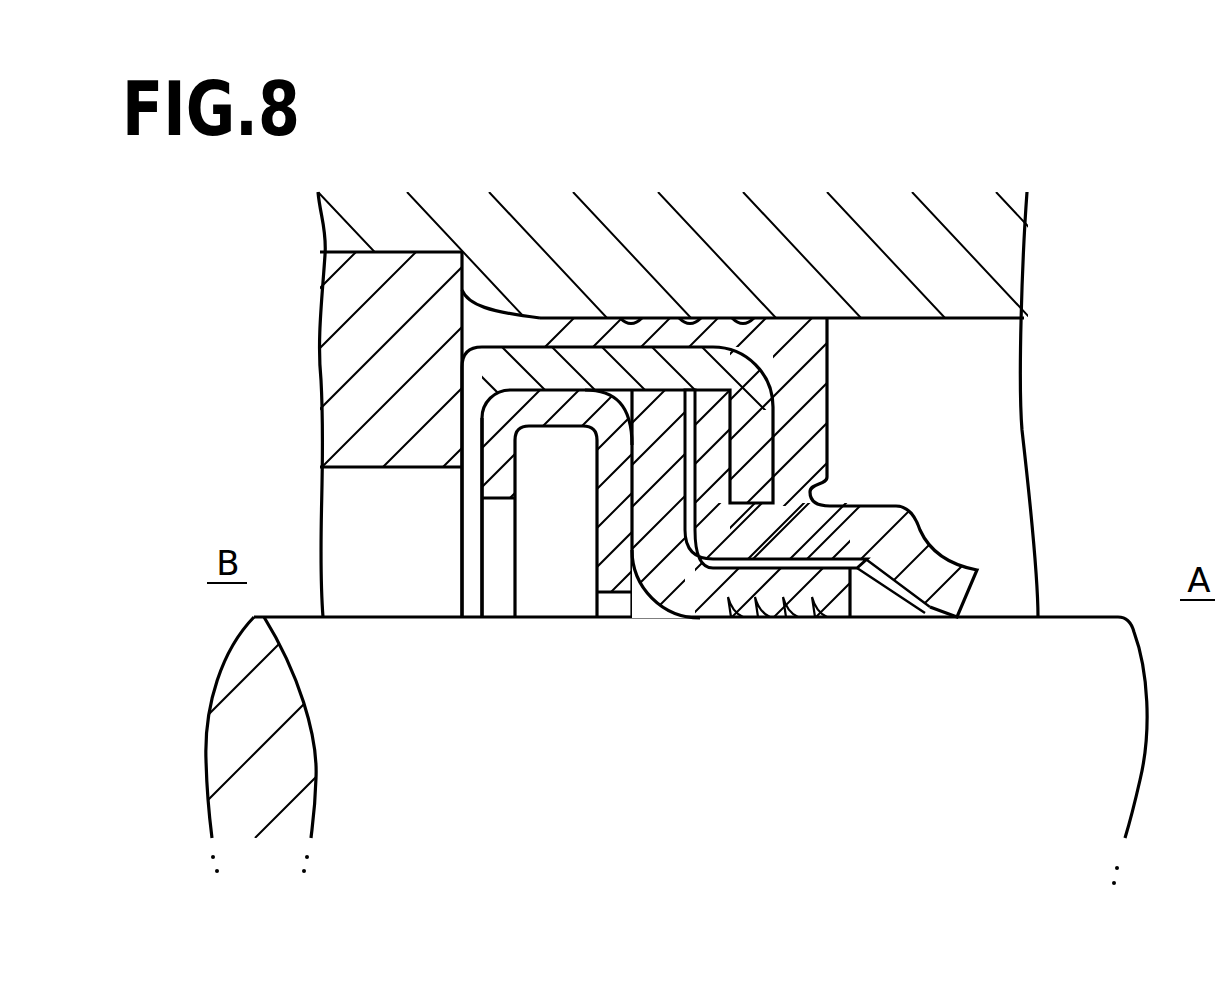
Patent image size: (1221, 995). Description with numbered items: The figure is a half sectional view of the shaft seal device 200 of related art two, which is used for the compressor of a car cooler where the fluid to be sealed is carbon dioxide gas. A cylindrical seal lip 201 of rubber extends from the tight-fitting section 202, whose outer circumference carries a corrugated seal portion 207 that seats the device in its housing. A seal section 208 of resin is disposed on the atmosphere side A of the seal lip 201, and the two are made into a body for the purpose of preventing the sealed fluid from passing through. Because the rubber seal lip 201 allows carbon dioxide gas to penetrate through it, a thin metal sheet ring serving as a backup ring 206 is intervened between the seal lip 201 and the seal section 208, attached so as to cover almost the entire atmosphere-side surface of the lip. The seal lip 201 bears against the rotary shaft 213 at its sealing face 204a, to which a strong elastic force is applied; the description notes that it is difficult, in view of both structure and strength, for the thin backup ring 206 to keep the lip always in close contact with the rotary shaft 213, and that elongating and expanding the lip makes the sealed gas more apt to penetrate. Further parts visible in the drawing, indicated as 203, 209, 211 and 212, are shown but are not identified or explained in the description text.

The shaft seal device 200 is at (1055, 163).
The seal lip 201 is at (831, 384).
The tight-fitting section 202 is at (803, 343).
The reinforcing ring 203 is at (547, 363).
The sealing face 204a is at (958, 589).
The backup ring 206 is at (700, 552).
The outer circumferential corrugated seal portion 207 is at (746, 318).
The seal section 208 is at (658, 570).
The auxiliary lip 209 is at (606, 540).
The housing 211 is at (1013, 256).
The housing bore surface 212 is at (979, 320).
The rotary shaft 213 is at (1067, 638).